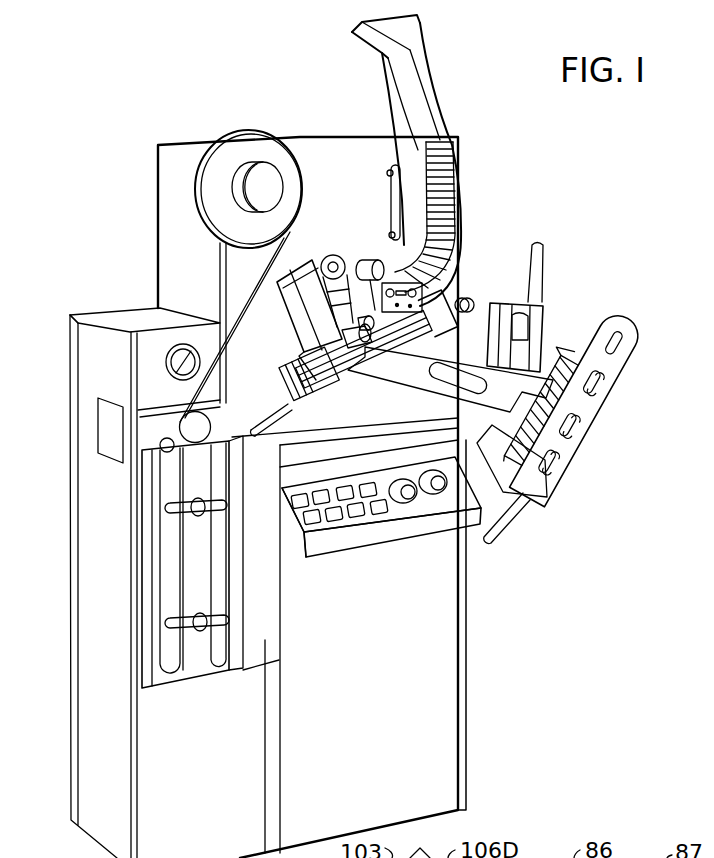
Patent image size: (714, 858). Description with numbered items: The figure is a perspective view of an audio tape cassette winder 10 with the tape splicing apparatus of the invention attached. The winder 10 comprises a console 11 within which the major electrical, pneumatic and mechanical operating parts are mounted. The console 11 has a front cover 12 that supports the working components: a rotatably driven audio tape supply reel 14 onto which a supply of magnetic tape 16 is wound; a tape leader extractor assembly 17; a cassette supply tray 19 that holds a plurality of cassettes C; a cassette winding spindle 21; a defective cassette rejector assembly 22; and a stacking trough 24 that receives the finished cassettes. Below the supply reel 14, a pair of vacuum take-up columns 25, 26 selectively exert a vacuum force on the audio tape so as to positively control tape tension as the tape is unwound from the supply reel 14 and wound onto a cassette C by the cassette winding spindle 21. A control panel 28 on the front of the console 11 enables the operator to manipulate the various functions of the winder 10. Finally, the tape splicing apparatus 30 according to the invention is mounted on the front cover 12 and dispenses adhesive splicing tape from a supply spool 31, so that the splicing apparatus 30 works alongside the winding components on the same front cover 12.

The audio tape cassette winder 10 is at (148, 266).
The console 11 is at (168, 192).
The front cover 12 is at (312, 152).
The audio tape supply reel 14 is at (273, 176).
The magnetic tape 16 is at (229, 199).
The tape leader extractor assembly 17 is at (318, 390).
The cassette supply tray 19 is at (428, 96).
The cassette C is at (442, 187).
The cassette winding spindle 21 is at (415, 285).
The defective cassette rejector assembly 22 is at (505, 330).
The stacking trough 24 is at (605, 376).
The vacuum take-up column 25 is at (173, 582).
The vacuum take-up column 26 is at (220, 588).
The control panel 28 is at (360, 538).
The tape splicing apparatus 30 is at (300, 283).
The supply spool 31 is at (340, 264).